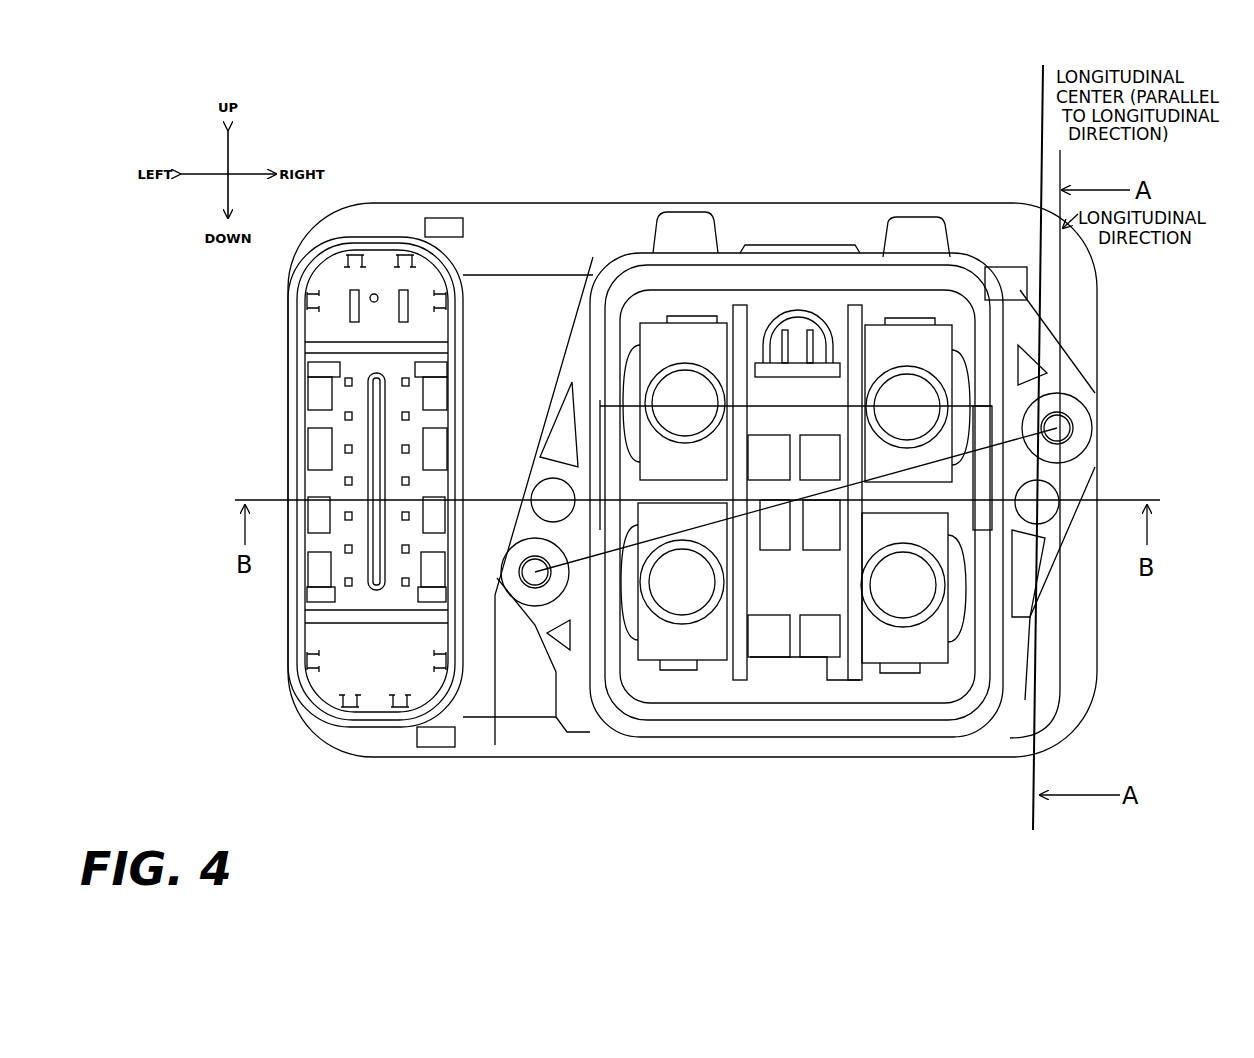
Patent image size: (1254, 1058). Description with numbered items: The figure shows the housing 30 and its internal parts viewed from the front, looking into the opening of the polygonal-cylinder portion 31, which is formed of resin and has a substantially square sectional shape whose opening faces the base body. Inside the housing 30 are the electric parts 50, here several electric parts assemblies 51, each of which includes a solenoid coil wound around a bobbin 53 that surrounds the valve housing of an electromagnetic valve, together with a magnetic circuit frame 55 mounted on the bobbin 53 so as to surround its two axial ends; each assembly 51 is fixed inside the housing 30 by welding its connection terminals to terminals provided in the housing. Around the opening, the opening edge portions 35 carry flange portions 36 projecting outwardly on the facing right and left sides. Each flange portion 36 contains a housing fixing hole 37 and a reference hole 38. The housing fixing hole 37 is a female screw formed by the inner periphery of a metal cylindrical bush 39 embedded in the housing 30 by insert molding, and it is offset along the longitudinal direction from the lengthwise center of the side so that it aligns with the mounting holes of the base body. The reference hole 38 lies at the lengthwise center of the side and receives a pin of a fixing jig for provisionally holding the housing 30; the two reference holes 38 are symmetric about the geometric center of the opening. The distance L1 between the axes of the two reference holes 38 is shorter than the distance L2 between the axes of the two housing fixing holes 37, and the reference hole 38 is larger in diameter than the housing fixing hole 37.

The housing 30 is at (540, 232).
The polygonal-cylinder portion 31 is at (808, 275).
The opening edge portion 35 is at (1005, 345).
The flange portion 36 is at (1060, 525).
The housing fixing hole 37 is at (518, 575).
The reference hole 38 is at (550, 478).
The bush 39 is at (1070, 410).
The electric parts 50 is at (755, 650).
The electric parts assembly 51 is at (708, 325).
The bobbin 53 is at (613, 650).
The magnetic circuit frame 55 is at (643, 650).
The distance between the two reference holes L1 is at (560, 470).
The distance between the two housing fixing holes L2 is at (820, 650).